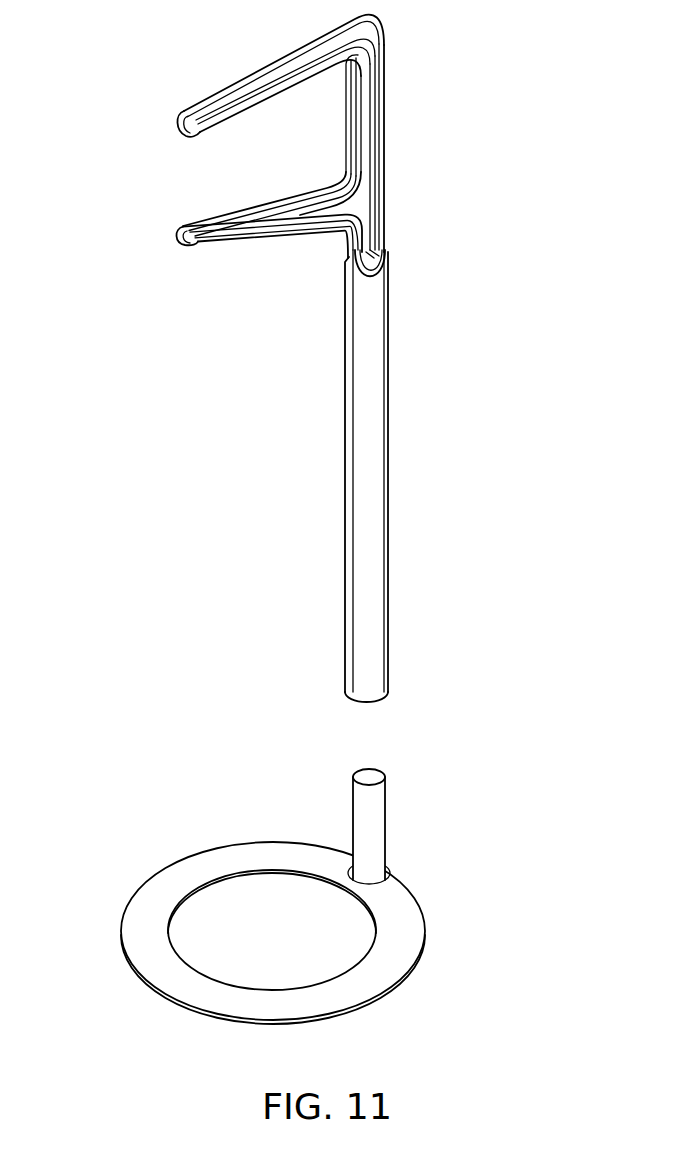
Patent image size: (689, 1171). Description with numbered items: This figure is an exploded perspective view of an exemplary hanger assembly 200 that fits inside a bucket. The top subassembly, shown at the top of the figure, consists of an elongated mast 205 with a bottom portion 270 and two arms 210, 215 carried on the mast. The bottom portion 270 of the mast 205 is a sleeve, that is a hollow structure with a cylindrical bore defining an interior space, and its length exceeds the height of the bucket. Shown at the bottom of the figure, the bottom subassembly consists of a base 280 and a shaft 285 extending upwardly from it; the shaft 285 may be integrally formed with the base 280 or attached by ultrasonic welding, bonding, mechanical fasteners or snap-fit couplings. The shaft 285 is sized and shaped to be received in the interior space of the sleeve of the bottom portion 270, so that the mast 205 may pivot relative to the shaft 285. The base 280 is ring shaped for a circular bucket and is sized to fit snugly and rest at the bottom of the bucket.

The hanger assembly 200 is at (395, 200).
The mast 205 is at (385, 138).
The arm 210 is at (213, 108).
The arm 215 is at (223, 220).
The bottom portion 270 is at (386, 498).
The base 280 is at (177, 890).
The shaft 285 is at (385, 825).